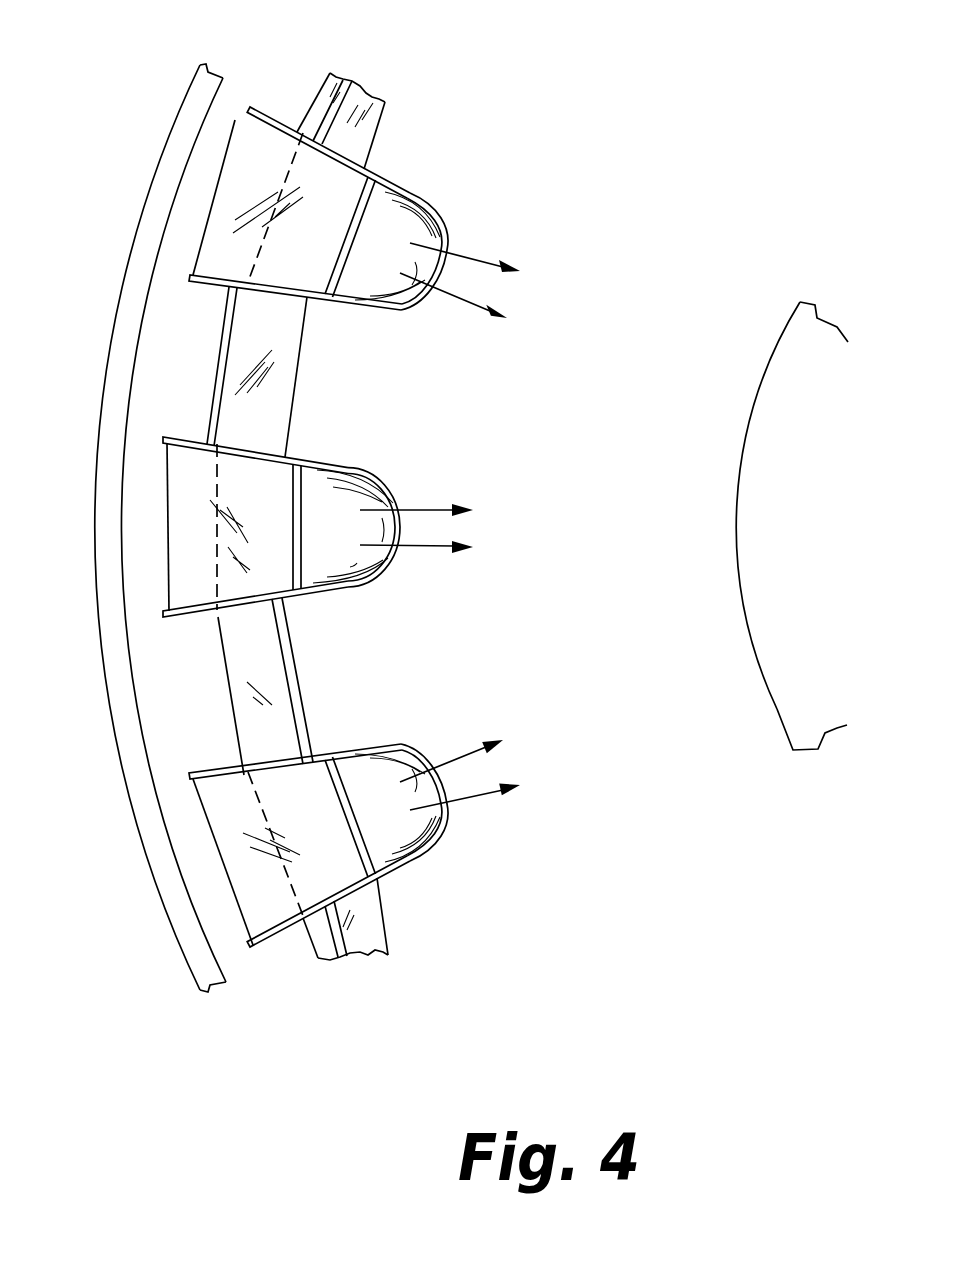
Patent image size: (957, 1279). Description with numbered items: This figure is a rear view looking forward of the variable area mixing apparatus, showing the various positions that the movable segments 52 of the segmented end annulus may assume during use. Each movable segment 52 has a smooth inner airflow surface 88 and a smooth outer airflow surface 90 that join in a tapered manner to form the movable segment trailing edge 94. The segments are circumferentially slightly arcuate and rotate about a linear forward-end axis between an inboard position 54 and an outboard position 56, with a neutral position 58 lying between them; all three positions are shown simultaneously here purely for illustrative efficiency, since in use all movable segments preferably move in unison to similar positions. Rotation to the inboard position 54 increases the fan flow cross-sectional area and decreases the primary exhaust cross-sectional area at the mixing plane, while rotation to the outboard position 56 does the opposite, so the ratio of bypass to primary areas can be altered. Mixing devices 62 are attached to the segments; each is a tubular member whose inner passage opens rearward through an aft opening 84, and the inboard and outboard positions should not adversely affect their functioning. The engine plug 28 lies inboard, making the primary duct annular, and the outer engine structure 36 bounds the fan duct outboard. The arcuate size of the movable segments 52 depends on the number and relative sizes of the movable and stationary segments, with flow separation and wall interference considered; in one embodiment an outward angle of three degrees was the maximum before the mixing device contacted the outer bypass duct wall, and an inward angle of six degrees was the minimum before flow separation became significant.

The engine plug 28 is at (777, 712).
The outer engine structure 36 is at (197, 98).
The movable segments 52 is at (213, 408).
The inboard position 54 is at (148, 699).
The outboard position 56 is at (148, 378).
The neutral position 58 is at (305, 47).
The mixing devices 62 is at (460, 183).
The aft opening 84 is at (413, 305).
The inner airflow surface 88 is at (345, 140).
The outer airflow surface 90 is at (342, 123).
The movable segment trailing edge 94 is at (342, 123).